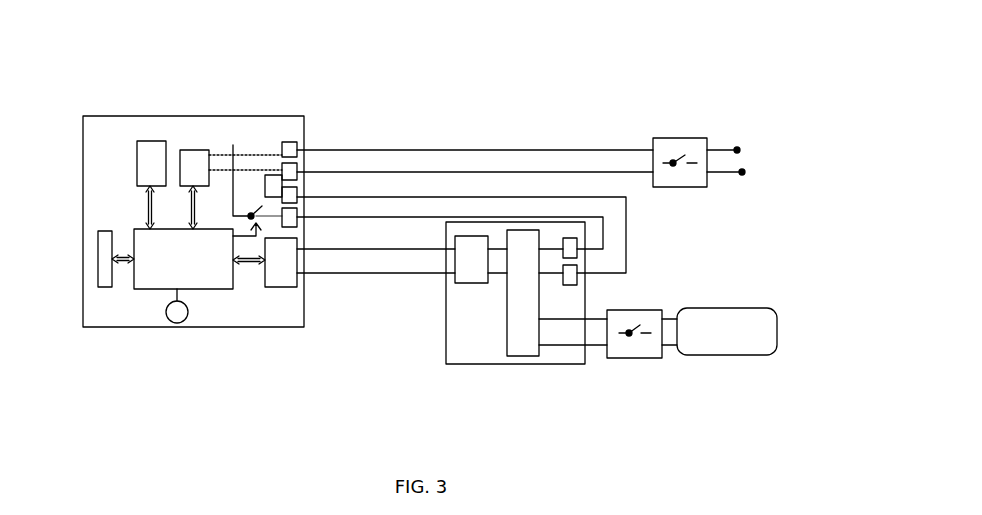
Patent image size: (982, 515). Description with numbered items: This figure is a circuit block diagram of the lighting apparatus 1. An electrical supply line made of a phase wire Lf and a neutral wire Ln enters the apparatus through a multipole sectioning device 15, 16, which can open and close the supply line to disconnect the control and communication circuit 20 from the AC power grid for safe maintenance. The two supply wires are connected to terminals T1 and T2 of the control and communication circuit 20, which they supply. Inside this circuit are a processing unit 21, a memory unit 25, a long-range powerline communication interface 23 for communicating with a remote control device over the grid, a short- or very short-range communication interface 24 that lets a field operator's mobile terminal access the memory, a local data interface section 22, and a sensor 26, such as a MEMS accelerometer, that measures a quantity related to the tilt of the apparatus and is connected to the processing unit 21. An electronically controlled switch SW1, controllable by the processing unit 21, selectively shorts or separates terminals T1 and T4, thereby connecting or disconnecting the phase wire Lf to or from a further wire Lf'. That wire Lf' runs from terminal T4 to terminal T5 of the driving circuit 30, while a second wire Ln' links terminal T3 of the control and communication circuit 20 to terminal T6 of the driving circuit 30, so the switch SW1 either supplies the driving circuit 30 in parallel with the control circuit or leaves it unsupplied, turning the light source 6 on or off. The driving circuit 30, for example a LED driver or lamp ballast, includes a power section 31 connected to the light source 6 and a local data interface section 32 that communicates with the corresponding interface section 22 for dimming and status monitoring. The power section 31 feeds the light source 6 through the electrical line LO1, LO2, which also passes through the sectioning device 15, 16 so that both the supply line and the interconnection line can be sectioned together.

The lighting apparatus 1 is at (363, 75).
The light source 6 is at (737, 355).
The sectioning device 15 is at (657, 250).
The sectioning device 16 is at (665, 138).
The control and communication circuit 20 is at (146, 327).
The processing unit 21 is at (213, 289).
The local data interface section 22 is at (275, 287).
The long-range powerline communication interface 23 is at (185, 150).
The short- or very short-range communication interface 24 is at (147, 141).
The memory unit 25 is at (98, 263).
The sensor 26 is at (177, 323).
The driving circuit 30 is at (525, 364).
The power section 31 is at (507, 348).
The local data interface section 32 is at (462, 284).
The electronically controlled switch SW1 is at (255, 188).
The terminal T1 is at (288, 141).
The terminal T2 is at (298, 171).
The terminal T3 is at (297, 193).
The terminal T4 is at (297, 221).
The terminal T5 is at (577, 245).
The terminal T6 is at (590, 278).
The phase wire Lf is at (524, 108).
The neutral wire Ln is at (528, 161).
The wire Lf' is at (450, 162).
The wire Ln' is at (490, 235).
The electrical line wire LO1 is at (593, 319).
The electrical line wire LO2 is at (593, 345).